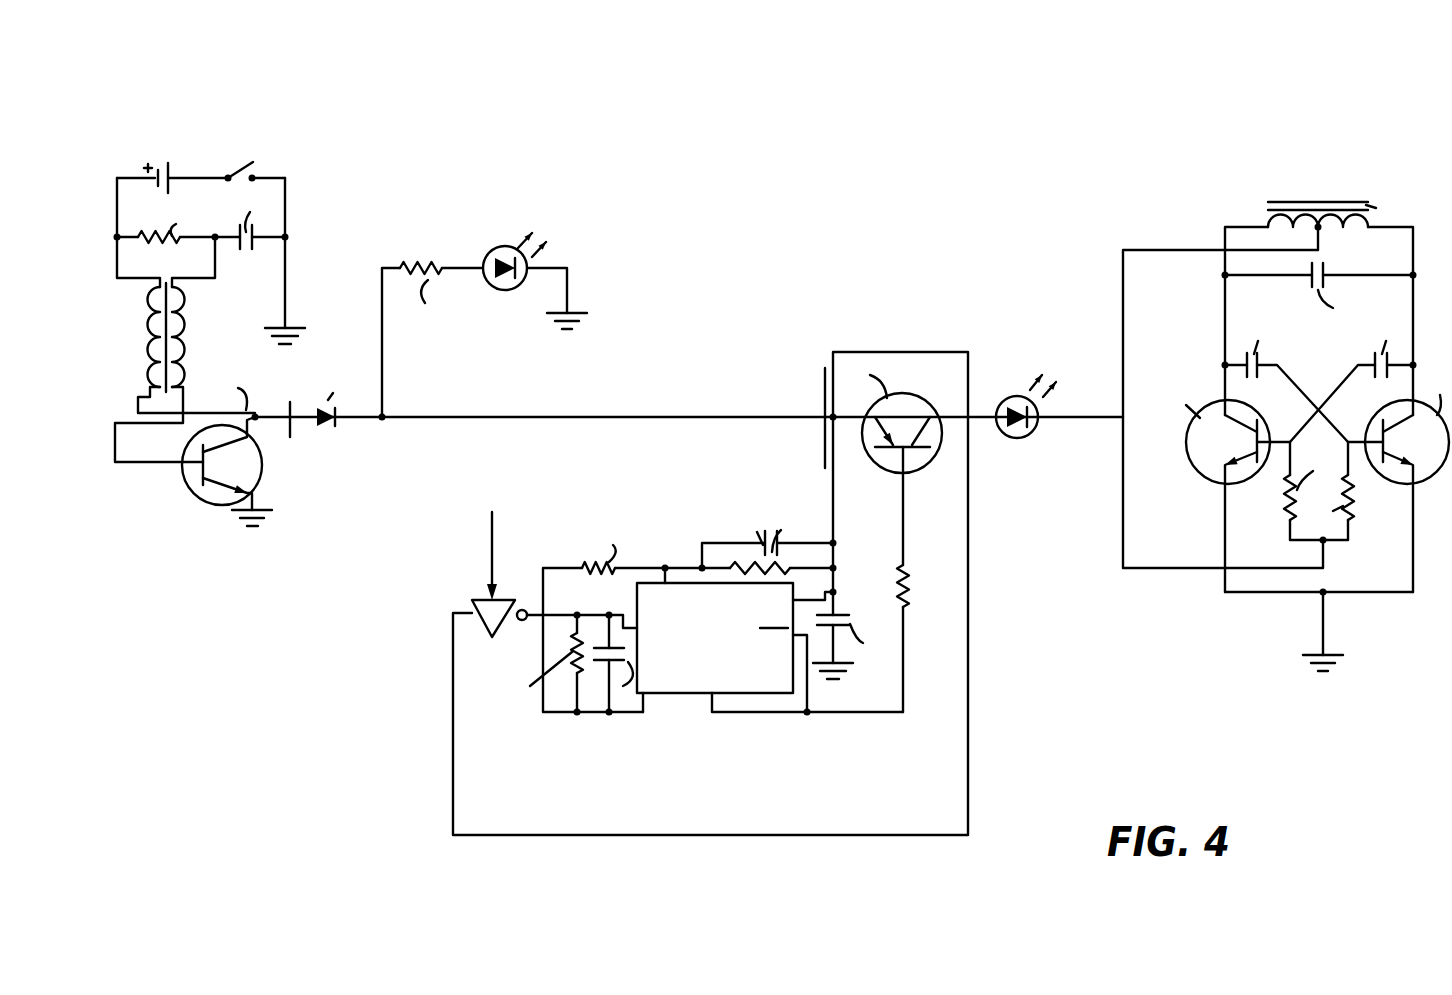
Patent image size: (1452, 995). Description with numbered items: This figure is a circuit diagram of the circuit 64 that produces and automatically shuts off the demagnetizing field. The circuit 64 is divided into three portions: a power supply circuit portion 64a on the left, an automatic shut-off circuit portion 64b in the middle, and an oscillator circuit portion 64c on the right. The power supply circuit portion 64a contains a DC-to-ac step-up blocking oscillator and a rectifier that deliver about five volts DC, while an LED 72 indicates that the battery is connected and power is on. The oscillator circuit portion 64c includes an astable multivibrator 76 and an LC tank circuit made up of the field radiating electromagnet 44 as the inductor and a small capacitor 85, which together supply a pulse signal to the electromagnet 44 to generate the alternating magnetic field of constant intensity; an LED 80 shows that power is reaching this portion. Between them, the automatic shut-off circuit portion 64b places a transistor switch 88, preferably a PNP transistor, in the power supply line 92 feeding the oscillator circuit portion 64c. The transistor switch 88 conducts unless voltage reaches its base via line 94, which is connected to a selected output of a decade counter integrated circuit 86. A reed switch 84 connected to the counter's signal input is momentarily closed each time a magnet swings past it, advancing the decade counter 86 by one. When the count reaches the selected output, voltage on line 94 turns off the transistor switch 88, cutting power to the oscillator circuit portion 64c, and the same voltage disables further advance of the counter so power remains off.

The field radiating electromagnet 44 is at (1266, 220).
The circuit 64 is at (752, 325).
The power supply circuit portion 64a is at (235, 592).
The automatic shut-off circuit portion 64b is at (733, 873).
The oscillator circuit portion 64c is at (1335, 748).
The LED 72 is at (500, 247).
The astable multivibrator 76 is at (1427, 490).
The LED 80 is at (1021, 437).
The reed switch 84 is at (480, 607).
The capacitor 85 is at (1327, 275).
The decade counter integrated circuit 86 is at (763, 695).
The transistor switch 88 is at (925, 396).
The power supply line 92 is at (755, 416).
The line 94 is at (905, 512).